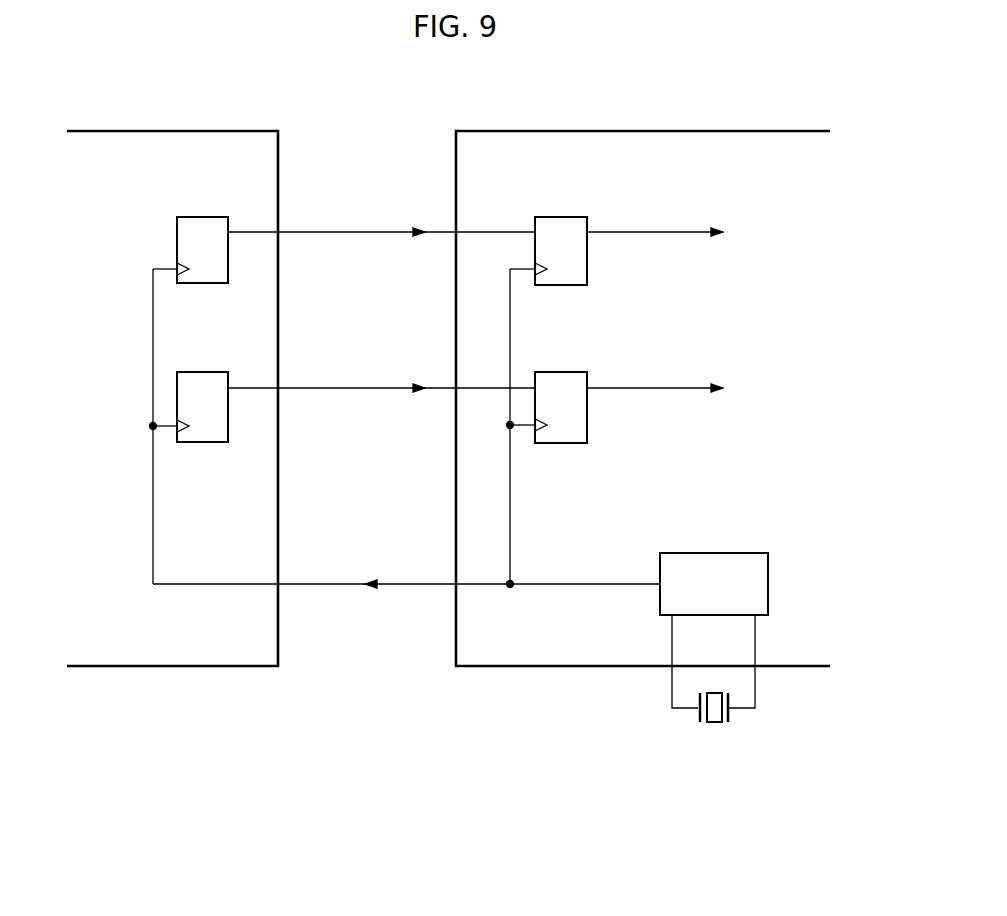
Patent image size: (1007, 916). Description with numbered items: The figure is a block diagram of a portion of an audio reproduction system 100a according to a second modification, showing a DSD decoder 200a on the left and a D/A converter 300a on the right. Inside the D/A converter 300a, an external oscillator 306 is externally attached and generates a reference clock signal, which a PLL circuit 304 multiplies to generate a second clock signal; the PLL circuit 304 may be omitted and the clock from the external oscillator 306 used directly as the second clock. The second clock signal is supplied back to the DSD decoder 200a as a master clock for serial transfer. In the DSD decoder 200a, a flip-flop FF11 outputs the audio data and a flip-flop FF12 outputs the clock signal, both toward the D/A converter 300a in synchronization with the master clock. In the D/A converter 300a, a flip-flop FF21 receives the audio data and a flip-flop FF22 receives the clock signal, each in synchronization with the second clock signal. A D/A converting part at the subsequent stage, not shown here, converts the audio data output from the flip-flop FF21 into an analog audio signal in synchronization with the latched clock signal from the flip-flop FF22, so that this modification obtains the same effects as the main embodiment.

The audio reproduction system 100a is at (478, 837).
The DSD decoder 200a is at (173, 130).
The D/A converter 300a is at (528, 130).
The PLL circuit 304 is at (718, 552).
The external oscillator 306 is at (717, 725).
The flip-flop FF11 is at (202, 284).
The flip-flop FF12 is at (202, 443).
The flip-flop FF21 is at (558, 286).
The flip-flop FF22 is at (558, 444).